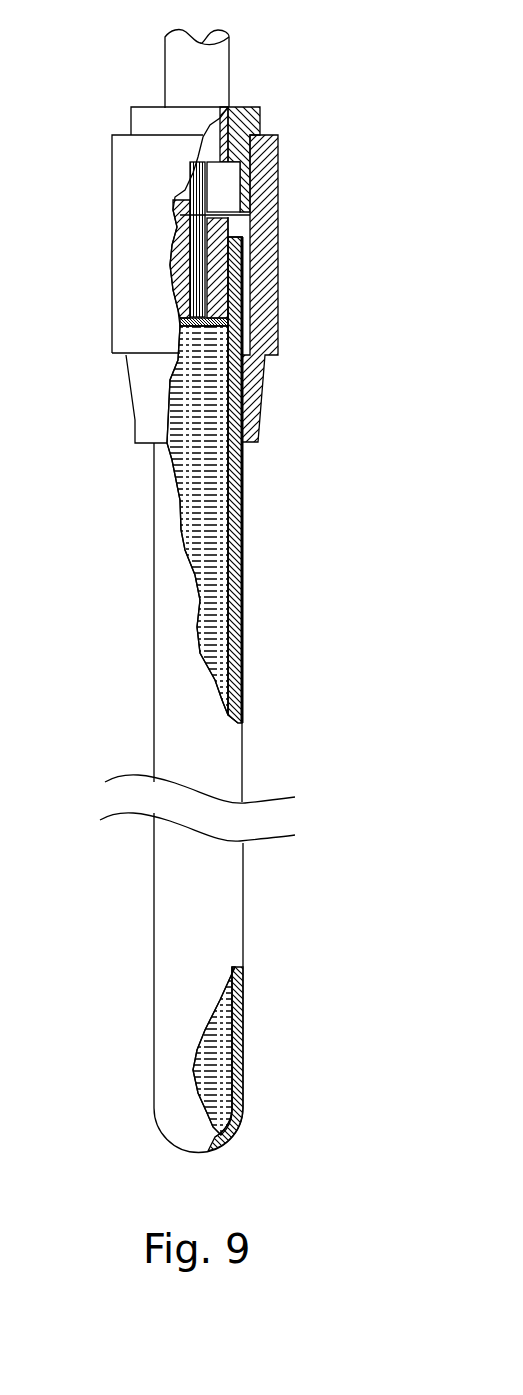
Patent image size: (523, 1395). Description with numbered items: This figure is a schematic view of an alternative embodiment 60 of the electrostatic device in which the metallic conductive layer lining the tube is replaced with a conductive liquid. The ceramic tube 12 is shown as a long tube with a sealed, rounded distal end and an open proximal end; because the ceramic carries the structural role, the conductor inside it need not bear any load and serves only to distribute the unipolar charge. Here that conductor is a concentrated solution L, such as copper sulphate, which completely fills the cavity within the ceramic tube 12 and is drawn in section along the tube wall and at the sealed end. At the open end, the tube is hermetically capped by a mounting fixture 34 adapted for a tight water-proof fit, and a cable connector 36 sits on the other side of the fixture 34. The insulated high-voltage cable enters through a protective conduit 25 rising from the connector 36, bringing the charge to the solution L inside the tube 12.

The ceramic tube 12 is at (173, 727).
The protective conduit 25 is at (230, 65).
The mounting fixture 34 is at (113, 268).
The cable connector 36 is at (131, 118).
The embodiment 60 is at (316, 194).
The concentrated solution L is at (208, 497).